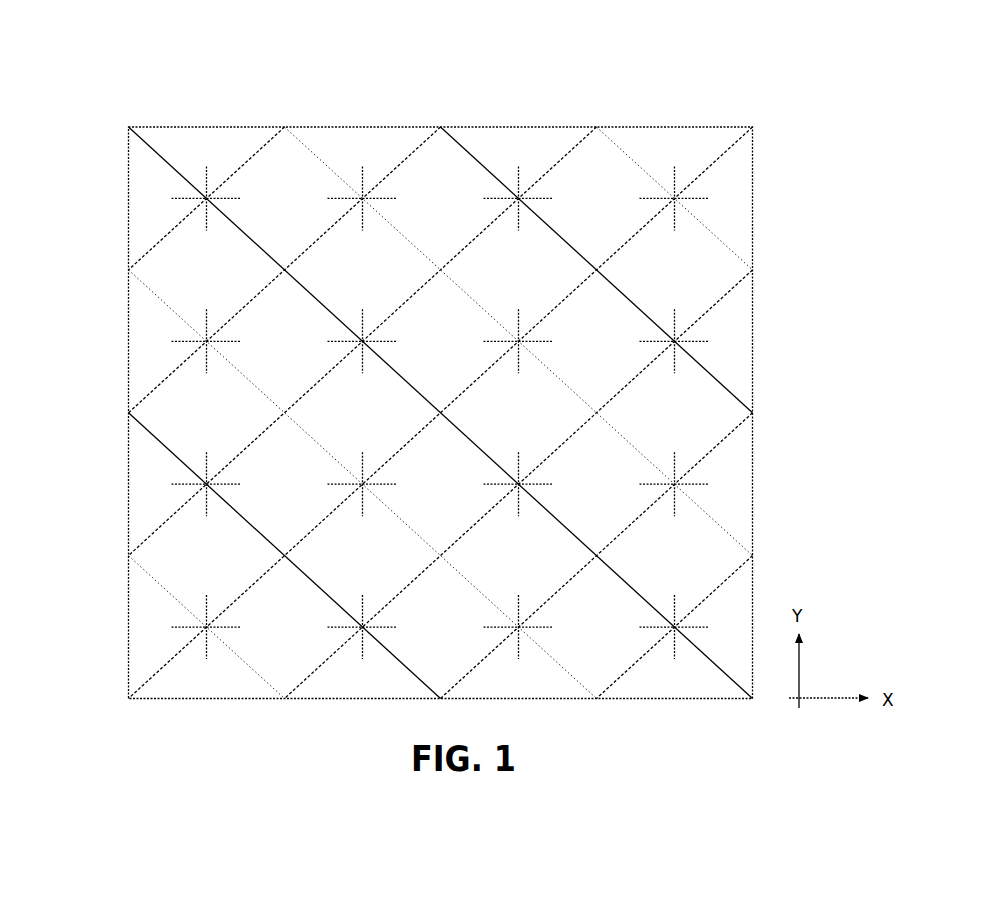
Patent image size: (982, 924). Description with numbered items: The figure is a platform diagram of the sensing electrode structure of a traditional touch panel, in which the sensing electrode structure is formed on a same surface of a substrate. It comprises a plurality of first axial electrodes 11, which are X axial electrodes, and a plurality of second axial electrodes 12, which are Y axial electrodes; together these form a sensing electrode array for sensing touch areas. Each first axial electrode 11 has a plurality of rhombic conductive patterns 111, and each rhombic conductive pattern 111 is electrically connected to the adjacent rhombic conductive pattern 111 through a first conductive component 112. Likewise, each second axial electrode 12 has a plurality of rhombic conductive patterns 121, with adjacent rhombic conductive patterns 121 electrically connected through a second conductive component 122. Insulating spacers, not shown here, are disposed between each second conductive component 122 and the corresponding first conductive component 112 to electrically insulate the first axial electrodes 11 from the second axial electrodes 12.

The first axial electrode 11 is at (128, 199).
The second axial electrode 12 is at (207, 126).
The rhombic conductive pattern 111 is at (441, 413).
The first conductive component 112 is at (388, 197).
The rhombic conductive pattern 121 is at (441, 413).
The second conductive component 122 is at (209, 173).